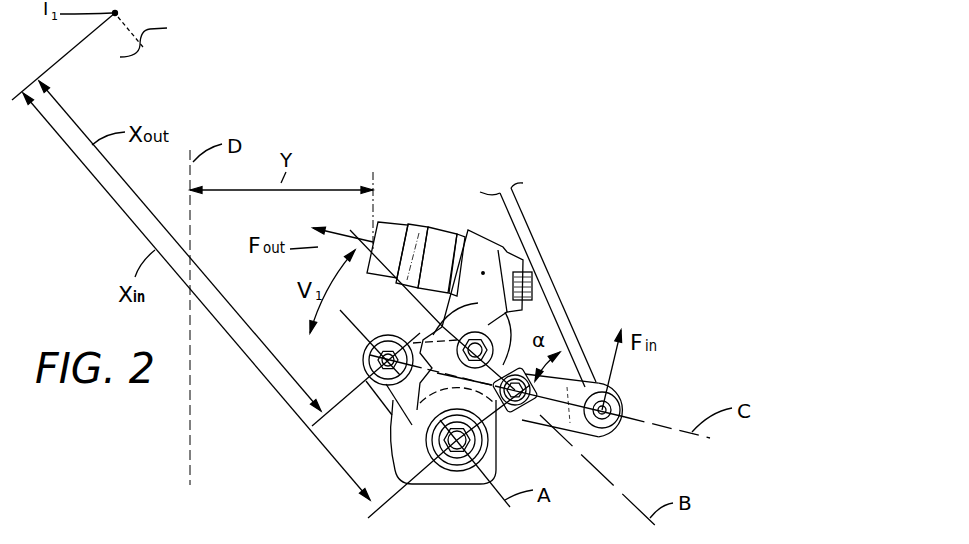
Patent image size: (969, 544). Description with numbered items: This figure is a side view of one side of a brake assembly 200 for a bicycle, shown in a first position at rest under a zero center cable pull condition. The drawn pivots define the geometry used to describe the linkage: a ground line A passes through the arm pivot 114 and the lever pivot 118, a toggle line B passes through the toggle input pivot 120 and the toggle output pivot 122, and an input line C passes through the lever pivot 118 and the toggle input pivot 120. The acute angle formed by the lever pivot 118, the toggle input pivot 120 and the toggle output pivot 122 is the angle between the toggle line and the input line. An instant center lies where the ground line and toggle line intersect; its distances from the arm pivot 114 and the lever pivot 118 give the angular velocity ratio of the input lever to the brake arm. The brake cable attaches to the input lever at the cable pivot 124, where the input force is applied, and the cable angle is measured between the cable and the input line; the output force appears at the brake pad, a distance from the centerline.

The brake assembly 200 is at (653, 281).
The arm pivot 114 is at (472, 433).
The lever pivot 118 is at (378, 335).
The toggle input pivot 120 is at (526, 411).
The toggle output pivot 122 is at (540, 307).
The cable pivot 124 is at (625, 397).